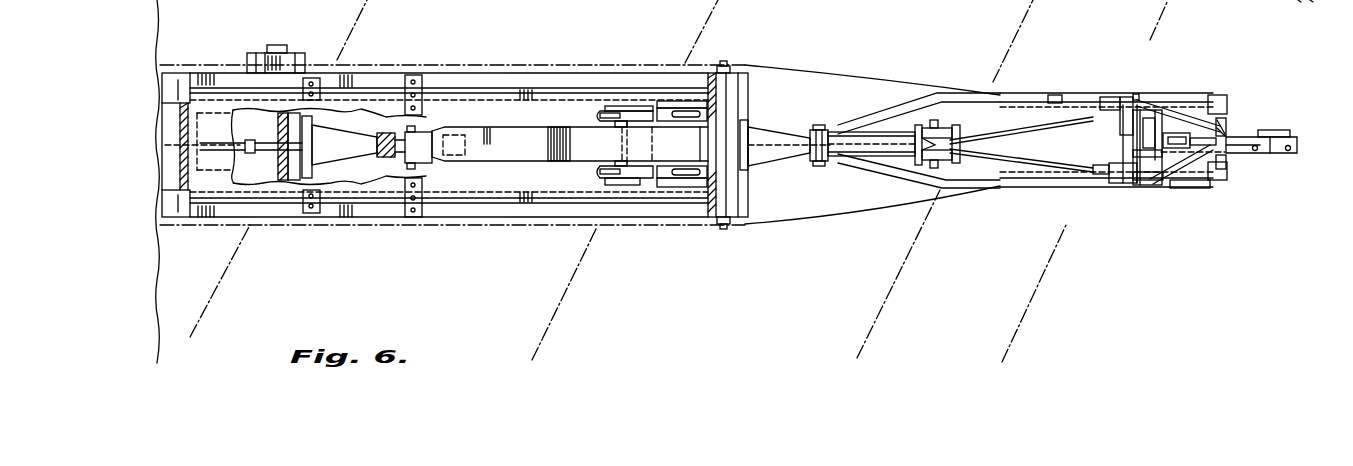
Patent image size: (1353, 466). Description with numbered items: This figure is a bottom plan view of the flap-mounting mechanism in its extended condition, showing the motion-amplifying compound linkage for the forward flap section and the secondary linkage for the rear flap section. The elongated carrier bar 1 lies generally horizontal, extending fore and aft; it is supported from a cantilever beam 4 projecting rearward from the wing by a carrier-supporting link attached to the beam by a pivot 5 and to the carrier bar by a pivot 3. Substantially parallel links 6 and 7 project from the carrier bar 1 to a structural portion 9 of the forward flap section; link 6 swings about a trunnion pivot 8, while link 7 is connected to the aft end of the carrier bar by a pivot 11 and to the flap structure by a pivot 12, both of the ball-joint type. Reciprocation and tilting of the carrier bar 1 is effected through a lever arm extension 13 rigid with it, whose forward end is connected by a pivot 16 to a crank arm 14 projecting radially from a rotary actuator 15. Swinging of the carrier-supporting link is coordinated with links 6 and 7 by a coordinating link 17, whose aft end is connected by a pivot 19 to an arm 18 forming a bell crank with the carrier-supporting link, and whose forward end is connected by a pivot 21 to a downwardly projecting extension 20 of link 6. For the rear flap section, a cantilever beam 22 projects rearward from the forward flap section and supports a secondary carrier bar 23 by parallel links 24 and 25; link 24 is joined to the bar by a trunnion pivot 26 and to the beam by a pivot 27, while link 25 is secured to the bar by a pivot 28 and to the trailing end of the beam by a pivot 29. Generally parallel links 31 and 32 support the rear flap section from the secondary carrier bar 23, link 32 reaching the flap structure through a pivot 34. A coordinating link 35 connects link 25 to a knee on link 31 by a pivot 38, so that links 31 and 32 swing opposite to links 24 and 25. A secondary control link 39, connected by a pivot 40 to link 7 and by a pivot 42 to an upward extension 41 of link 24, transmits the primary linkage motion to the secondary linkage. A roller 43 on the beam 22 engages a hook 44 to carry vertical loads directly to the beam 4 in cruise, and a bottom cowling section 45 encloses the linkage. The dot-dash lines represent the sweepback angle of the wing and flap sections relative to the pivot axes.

The carrier bar 1 is at (790, 130).
The pivot 3 is at (751, 82).
The cantilever beam 4 is at (587, 82).
The pivot 5 is at (725, 68).
The link 6 is at (625, 148).
The link 7 is at (867, 140).
The pivot 8 is at (628, 140).
The structural portion 9 is at (903, 133).
The pivot 11 is at (817, 158).
The pivot 12 is at (917, 163).
The lever arm extension 13 is at (540, 147).
The crank arm 14 is at (340, 136).
The rotary actuator 15 is at (294, 57).
The pivot 16 is at (427, 125).
The coordinating link 17 is at (653, 108).
The arm 18 is at (778, 168).
The pivot 19 is at (680, 100).
The extension 20 is at (615, 111).
The pivot 21 is at (608, 106).
The cantilever beam 22 is at (1030, 97).
The secondary carrier bar 23 is at (1183, 113).
The link 24 is at (1114, 124).
The link 25 is at (1227, 160).
The pivot 26 is at (1127, 146).
The pivot 27 is at (1137, 95).
The pivot 28 is at (1227, 120).
The pivot 29 is at (1224, 97).
The link 31 is at (1161, 132).
The link 32 is at (1265, 153).
The pivot 34 is at (1291, 135).
The coordinating link 35 is at (1197, 180).
The pivot 38 is at (1166, 165).
The secondary control link 39 is at (1010, 120).
The pivot 40 is at (953, 137).
The upward extension 41 is at (1130, 107).
The pivot 42 is at (1103, 107).
The roller 43 is at (1060, 93).
The hook 44 is at (704, 90).
The bottom cowling section 45 is at (783, 218).